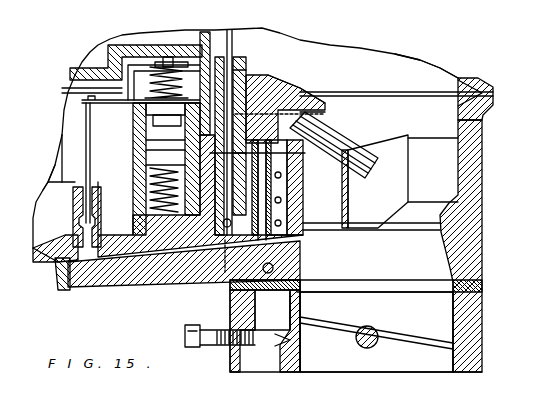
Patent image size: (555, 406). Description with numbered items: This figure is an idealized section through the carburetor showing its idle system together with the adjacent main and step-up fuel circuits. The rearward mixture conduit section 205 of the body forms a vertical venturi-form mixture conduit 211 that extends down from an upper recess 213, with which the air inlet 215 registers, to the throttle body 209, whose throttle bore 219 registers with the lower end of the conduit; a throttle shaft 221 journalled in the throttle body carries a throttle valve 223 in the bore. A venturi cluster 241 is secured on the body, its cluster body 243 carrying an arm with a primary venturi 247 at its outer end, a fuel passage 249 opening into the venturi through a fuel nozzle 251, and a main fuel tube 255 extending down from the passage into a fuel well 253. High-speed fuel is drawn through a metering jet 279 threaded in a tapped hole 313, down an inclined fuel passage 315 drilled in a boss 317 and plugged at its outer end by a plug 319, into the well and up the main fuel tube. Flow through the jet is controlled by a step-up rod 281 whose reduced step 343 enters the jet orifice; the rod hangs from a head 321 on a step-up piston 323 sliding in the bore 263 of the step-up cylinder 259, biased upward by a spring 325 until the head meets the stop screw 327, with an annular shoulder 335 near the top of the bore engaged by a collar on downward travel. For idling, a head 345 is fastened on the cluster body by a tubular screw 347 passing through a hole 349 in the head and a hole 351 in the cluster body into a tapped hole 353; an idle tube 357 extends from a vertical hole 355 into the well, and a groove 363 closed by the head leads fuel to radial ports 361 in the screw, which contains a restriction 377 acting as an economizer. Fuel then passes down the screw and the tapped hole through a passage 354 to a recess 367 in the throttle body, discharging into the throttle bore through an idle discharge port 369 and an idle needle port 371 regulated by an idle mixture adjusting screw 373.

The rearward mixture conduit section 205 is at (492, 255).
The throttle body 209 is at (484, 344).
The mixture conduit 211 is at (485, 271).
The upper recess 213 is at (483, 121).
The air inlet 215 is at (444, 74).
The throttle bore 219 is at (338, 362).
The throttle shaft 221 is at (375, 350).
The throttle valve 223 is at (408, 336).
The venturi cluster 241 is at (418, 192).
The cluster body 243 is at (378, 181).
The primary venturi 247 is at (402, 150).
The fuel passage 249 is at (336, 134).
The fuel nozzle 251 is at (334, 147).
The fuel well 253 is at (303, 249).
The main fuel tube 255 is at (303, 236).
The step-up cylinder 259 is at (140, 130).
The bore of the step-up cylinder 263 is at (148, 178).
The metering jet 279 is at (46, 188).
The step-up rod 281 is at (86, 166).
The tapped hole 313 is at (64, 245).
The inclined fuel passage 315 is at (118, 267).
The boss 317 is at (66, 292).
The plug 319 is at (43, 278).
The head 321 is at (130, 78).
The step-up piston 323 is at (146, 158).
The spring 325 is at (150, 196).
The stop screw 327 is at (168, 57).
The annular shoulder 335 is at (147, 108).
The step 343 is at (78, 217).
The head 345 is at (306, 93).
The tubular screw 347 is at (242, 56).
The hole in head 349 is at (205, 60).
The hole in cluster body 351 is at (220, 158).
The tapped hole 353 is at (222, 188).
The passage 354 is at (223, 222).
The vertical hole 355 is at (307, 112).
The idle tube 357 is at (303, 262).
The radial port 361 is at (253, 78).
The groove 363 is at (276, 92).
The recess 367 is at (262, 300).
The idle discharge port 369 is at (302, 322).
The idle needle port 371 is at (293, 340).
The idle mixture adjusting screw 373 is at (202, 350).
The restriction 377 is at (229, 64).